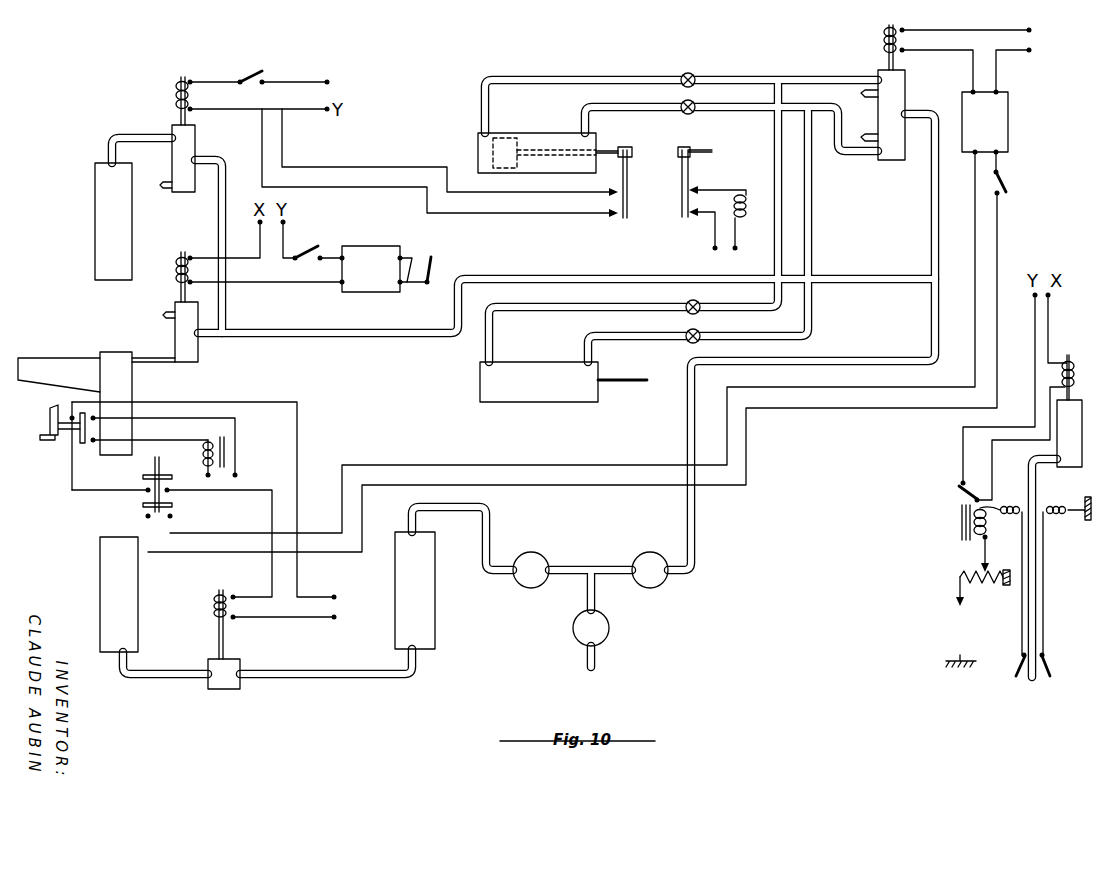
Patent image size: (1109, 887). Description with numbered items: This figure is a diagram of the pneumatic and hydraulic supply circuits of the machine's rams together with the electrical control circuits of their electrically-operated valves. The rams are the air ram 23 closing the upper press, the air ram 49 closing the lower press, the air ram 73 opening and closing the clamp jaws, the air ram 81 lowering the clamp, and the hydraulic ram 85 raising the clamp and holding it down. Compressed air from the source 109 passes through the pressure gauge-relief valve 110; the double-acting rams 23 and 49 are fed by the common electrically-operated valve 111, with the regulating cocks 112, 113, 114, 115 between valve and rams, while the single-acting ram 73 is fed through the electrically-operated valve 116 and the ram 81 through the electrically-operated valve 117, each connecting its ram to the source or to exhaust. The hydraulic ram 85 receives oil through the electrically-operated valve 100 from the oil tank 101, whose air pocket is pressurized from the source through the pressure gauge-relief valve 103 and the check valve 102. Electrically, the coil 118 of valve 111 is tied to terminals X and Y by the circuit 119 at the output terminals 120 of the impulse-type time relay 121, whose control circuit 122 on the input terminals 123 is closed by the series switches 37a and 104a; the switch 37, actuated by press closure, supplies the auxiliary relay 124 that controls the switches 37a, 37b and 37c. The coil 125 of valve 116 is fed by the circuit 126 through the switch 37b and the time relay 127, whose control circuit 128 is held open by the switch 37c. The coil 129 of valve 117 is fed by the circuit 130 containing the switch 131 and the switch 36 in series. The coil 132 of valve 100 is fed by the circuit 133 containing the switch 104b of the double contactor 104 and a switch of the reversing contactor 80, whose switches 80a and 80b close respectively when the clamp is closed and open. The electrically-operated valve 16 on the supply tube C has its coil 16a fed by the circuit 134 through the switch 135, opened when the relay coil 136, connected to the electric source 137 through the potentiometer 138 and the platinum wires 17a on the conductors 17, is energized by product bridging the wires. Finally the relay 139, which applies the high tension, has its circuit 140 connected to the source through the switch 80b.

The electrically-operated valve 16 is at (1072, 419).
The electromagnet 16a is at (1075, 373).
The conductors 17 is at (1037, 577).
The platinum wires 17a is at (1022, 658).
The air ram 23 is at (545, 141).
The switch 36 is at (614, 182).
The switch 37 is at (695, 182).
The switch 37a is at (1004, 170).
The switch 37b is at (316, 250).
The switch 37c is at (433, 267).
The air ram 49 is at (535, 372).
The air ram 73 is at (132, 382).
The reversing contactor 80 is at (60, 437).
The switch 80a is at (73, 440).
The switch 80b is at (88, 446).
The air ram 81 is at (97, 197).
The hydraulic ram 85 is at (100, 559).
The electrically-operated valve 100 is at (208, 661).
The oil tank 101 is at (398, 636).
The check valve 102 is at (410, 522).
The pressure gauge-relief valve 103 is at (532, 556).
The double contactor 104 is at (142, 494).
The switch 104a is at (172, 509).
The switch 104b is at (134, 477).
The compressed air source 109 is at (602, 624).
The pressure gauge-relief valve 110 is at (651, 556).
The electrically-operated valve 111 is at (878, 110).
The cock 112 is at (691, 71).
The cock 113 is at (695, 103).
The cock 114 is at (699, 303).
The cock 115 is at (699, 332).
The electrically-operated valve 116 is at (198, 350).
The electrically-operated valve 117 is at (184, 192).
The coil 118 is at (876, 41).
The circuit 119 is at (963, 31).
The output terminals 120 is at (996, 92).
The time relay 121 is at (1009, 118).
The control circuit 122 is at (976, 246).
The input terminals 123 is at (988, 143).
The auxiliary relay 124 is at (746, 200).
The coil 125 is at (177, 265).
The circuit 126 is at (250, 283).
The time relay 127 is at (360, 290).
The control circuit 128 is at (409, 266).
The coil 129 is at (177, 98).
The circuit 130 is at (281, 150).
The switch 131 is at (250, 80).
The coil 132 is at (214, 614).
The circuit 133 is at (297, 580).
The circuit 134 is at (990, 468).
The switch 135 is at (958, 490).
The relay coil 136 is at (960, 522).
The electric source 137 is at (958, 637).
The potentiometer 138 is at (983, 584).
The relay 139 is at (215, 451).
The circuit 140 is at (200, 440).
The supply tube C is at (1033, 629).